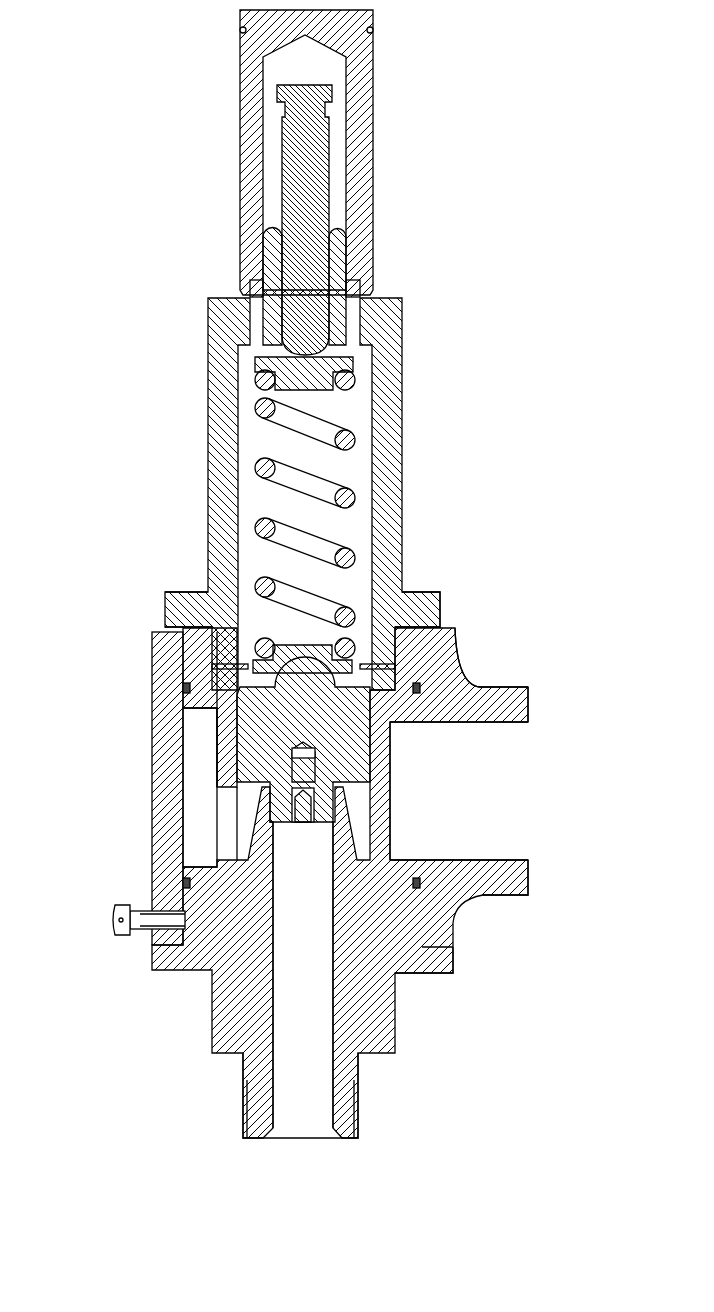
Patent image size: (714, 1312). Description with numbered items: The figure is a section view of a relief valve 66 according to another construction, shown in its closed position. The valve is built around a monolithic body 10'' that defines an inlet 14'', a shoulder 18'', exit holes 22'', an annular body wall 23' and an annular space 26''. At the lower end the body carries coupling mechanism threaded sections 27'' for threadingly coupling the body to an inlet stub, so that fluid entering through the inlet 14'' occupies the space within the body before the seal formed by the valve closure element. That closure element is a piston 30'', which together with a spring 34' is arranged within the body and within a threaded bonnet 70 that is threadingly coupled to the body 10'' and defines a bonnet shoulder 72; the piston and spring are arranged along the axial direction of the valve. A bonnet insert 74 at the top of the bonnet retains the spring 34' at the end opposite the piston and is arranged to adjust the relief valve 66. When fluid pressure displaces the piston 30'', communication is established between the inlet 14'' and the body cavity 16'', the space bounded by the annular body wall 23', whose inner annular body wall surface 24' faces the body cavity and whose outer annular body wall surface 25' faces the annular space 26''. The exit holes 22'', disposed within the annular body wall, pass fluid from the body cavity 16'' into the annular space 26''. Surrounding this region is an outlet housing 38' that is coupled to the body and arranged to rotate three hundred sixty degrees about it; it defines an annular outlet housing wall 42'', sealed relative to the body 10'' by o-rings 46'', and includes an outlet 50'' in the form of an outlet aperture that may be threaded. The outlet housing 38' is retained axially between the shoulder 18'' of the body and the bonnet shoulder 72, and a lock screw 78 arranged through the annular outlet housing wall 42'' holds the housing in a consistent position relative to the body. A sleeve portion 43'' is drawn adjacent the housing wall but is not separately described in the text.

The relief valve 66 is at (86, 281).
The threaded bonnet 70 is at (405, 447).
The bonnet shoulder 72 is at (438, 597).
The bonnet insert 74 is at (354, 320).
The spring 34' is at (360, 515).
The outlet housing 38' is at (517, 638).
The annular body wall 23' is at (538, 657).
The inner annular body wall surface 24' is at (503, 698).
The outer annular body wall surface 25' is at (478, 722).
The piston 30'' is at (500, 753).
The body cavity 16'' is at (500, 831).
The outlet 50'' is at (547, 865).
The o-rings 46'' is at (248, 765).
The annular space 26'' is at (219, 739).
The annular outlet housing wall 42'' is at (124, 788).
The sleeve 43'' is at (139, 726).
The exit holes 22'' is at (145, 789).
The lock screw 78 is at (114, 925).
The body 10'' is at (314, 883).
The coupling mechanism threaded sections 27'' is at (248, 1098).
The inlet 14'' is at (281, 1011).
The shoulder 18'' is at (455, 985).